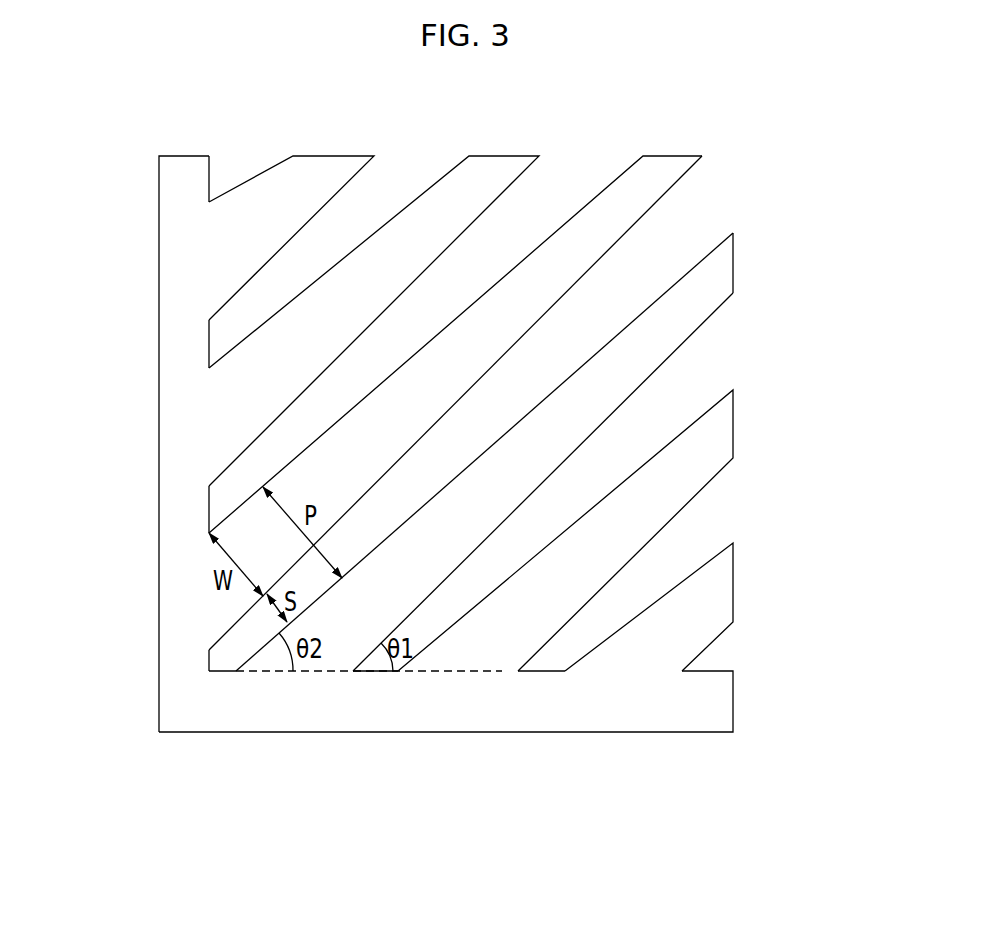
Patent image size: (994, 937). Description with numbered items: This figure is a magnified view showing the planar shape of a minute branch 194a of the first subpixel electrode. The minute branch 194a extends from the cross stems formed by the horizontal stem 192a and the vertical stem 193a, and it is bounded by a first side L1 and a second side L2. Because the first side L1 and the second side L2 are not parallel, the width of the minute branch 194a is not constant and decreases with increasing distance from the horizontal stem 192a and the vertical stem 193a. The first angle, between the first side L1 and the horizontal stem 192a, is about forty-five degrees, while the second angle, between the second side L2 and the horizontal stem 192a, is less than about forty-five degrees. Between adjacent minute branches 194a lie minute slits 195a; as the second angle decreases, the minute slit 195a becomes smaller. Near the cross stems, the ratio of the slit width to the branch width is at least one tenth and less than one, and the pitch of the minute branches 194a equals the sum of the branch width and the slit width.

The horizontal stem 192a is at (453, 705).
The vertical stem 193a is at (188, 430).
The minute branch 194a is at (533, 400).
The minute slit 195a is at (627, 310).
The first side L1 is at (682, 342).
The second side L2 is at (672, 287).